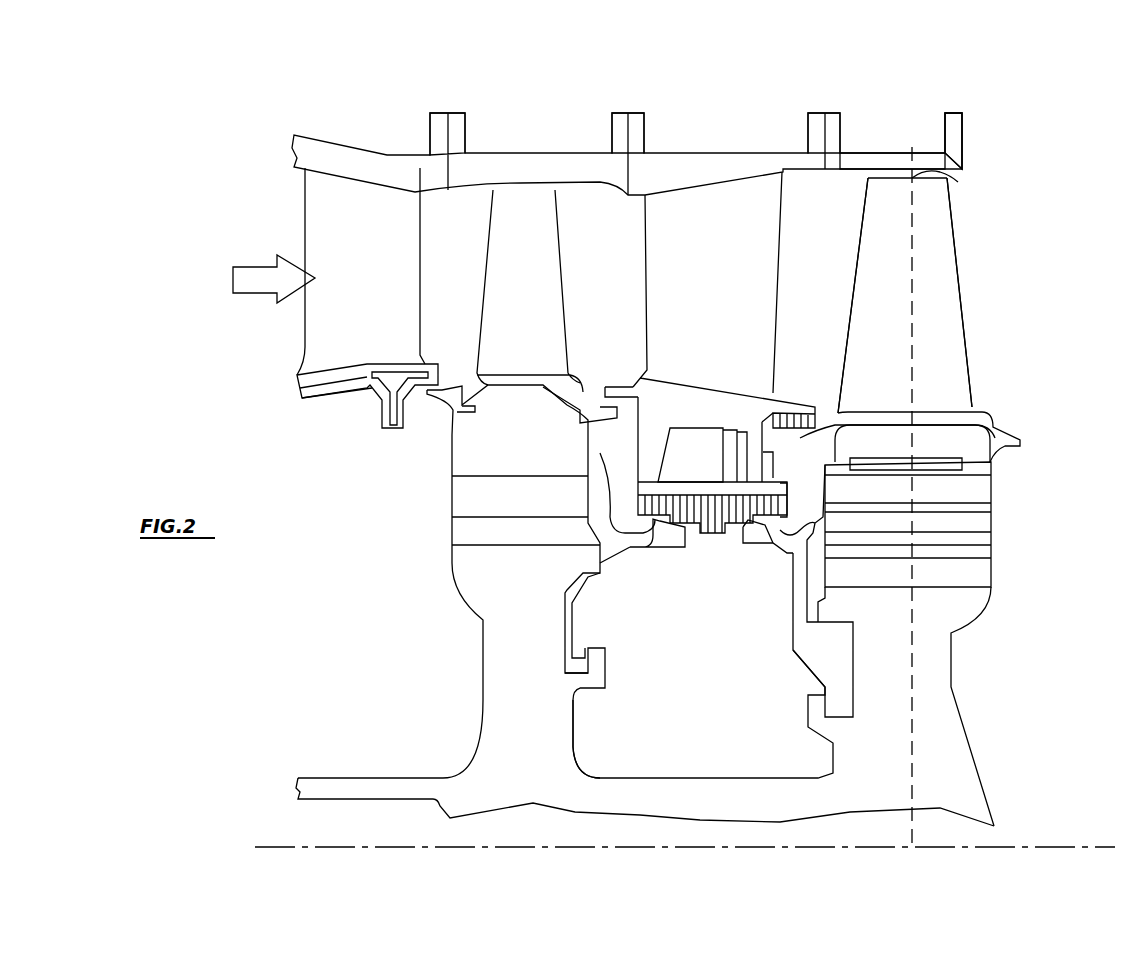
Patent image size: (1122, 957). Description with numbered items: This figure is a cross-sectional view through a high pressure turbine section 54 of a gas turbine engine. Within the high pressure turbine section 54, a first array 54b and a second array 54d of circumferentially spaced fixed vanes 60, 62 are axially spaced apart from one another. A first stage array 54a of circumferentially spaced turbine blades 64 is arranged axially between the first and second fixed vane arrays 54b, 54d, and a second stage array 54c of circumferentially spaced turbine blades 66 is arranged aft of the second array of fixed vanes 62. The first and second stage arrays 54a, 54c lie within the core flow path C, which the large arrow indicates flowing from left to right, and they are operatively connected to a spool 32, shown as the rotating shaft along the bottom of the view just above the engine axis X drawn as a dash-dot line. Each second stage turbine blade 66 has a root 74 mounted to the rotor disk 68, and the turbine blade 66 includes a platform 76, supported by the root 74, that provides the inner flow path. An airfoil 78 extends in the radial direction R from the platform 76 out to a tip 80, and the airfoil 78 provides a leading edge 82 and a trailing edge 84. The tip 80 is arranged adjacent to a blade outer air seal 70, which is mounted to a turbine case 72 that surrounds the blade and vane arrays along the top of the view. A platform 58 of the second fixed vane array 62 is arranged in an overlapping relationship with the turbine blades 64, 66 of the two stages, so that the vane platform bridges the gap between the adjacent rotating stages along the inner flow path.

The spool 32 is at (298, 792).
The high pressure turbine section 54 is at (655, 119).
The first stage array 54a is at (354, 138).
The first array of fixed vanes 54b is at (540, 145).
The second stage array 54c is at (683, 146).
The second array of fixed vanes 54d is at (900, 141).
The platform 58 is at (606, 387).
The fixed vane 60 is at (298, 250).
The fixed vane 62 is at (649, 243).
The turbine blade 64 is at (490, 262).
The turbine blade 66 is at (908, 498).
The rotor disk 68 is at (563, 716).
The blade outer air seal 70 is at (873, 162).
The turbine case 72 is at (958, 130).
The root 74 is at (897, 451).
The platform 76 is at (935, 428).
The airfoil 78 is at (918, 292).
The tip 80 is at (958, 182).
The leading edge 82 is at (853, 313).
The trailing edge 84 is at (972, 338).
The radial direction R is at (912, 336).
The core flow path C is at (256, 285).
The engine axis X is at (1083, 847).